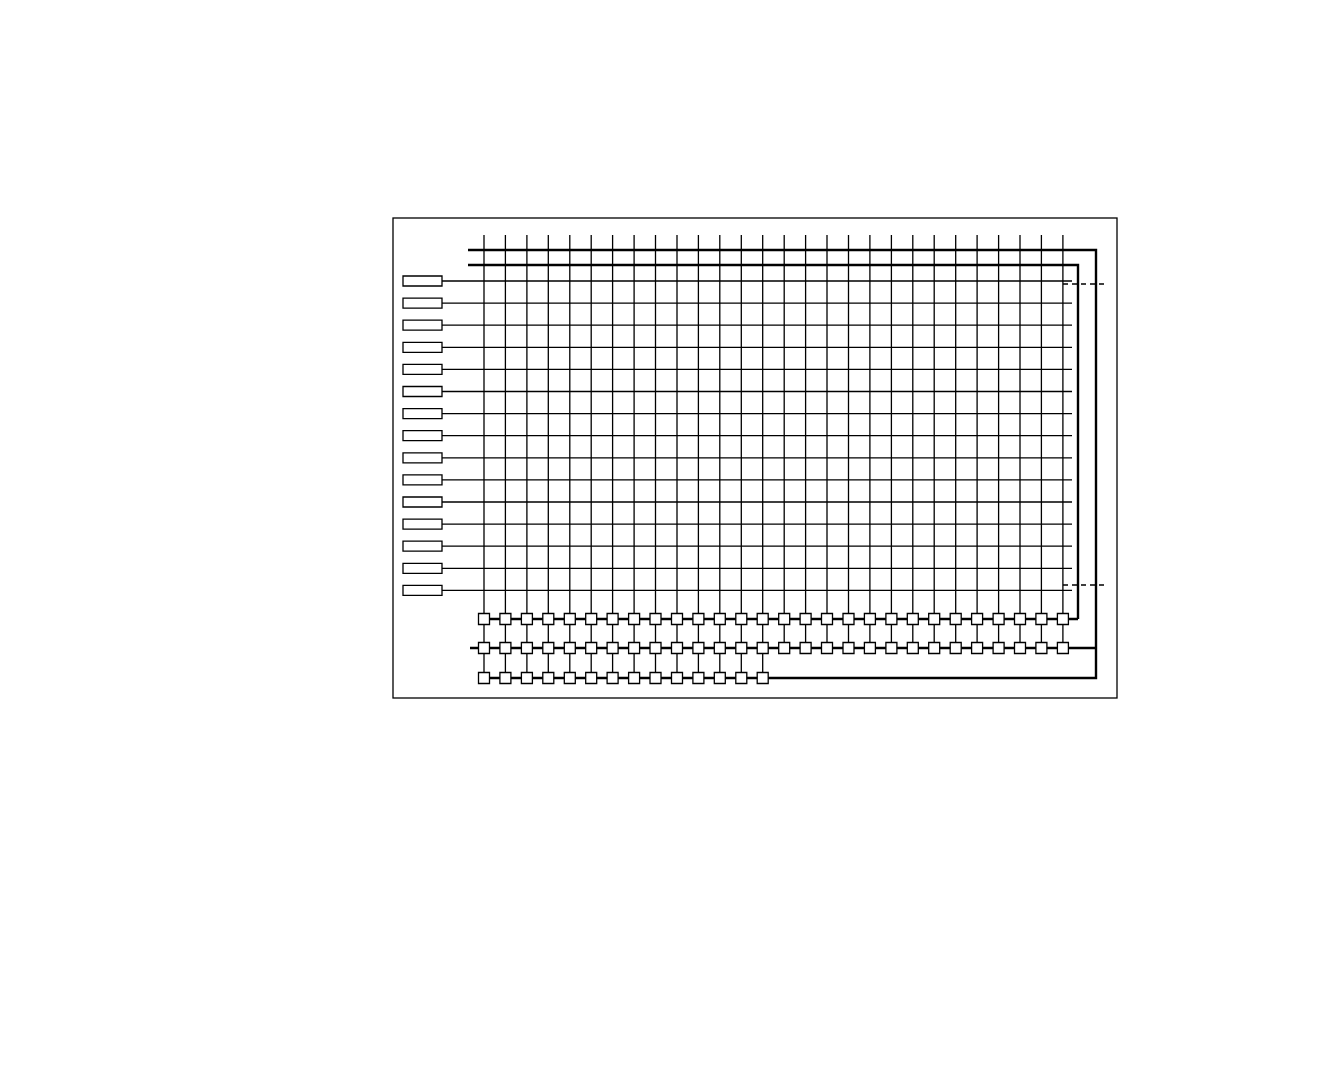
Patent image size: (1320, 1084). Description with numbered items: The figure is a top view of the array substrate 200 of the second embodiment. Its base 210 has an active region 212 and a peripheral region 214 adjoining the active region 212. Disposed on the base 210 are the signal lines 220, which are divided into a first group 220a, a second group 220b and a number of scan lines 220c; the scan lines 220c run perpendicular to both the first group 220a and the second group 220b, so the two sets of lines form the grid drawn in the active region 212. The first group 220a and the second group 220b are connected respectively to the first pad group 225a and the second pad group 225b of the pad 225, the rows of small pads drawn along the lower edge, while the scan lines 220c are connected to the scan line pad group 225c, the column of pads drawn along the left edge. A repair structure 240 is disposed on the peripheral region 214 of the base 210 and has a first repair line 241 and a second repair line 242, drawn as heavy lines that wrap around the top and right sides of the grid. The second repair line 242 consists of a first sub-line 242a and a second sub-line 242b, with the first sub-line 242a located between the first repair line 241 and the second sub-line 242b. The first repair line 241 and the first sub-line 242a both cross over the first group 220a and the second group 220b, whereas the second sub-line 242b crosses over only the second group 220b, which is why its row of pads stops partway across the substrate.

The array substrate 200 is at (360, 155).
The base 210 is at (432, 214).
The active region 212 is at (1032, 300).
The peripheral region 214 is at (1104, 230).
The signal lines 220 is at (597, 140).
The first group 220a is at (795, 230).
The second group 220b is at (763, 230).
The scan lines 220c is at (1105, 284).
The pad 225 is at (593, 773).
The first pad group 225a is at (783, 660).
The second pad group 225b is at (483, 690).
The scan line pad group 225c is at (388, 285).
The repair structure 240 is at (1202, 588).
The first repair line 241 is at (1097, 607).
The second repair line 242 is at (1095, 637).
The first sub-line 242a is at (1080, 653).
The second sub-line 242b is at (1095, 680).